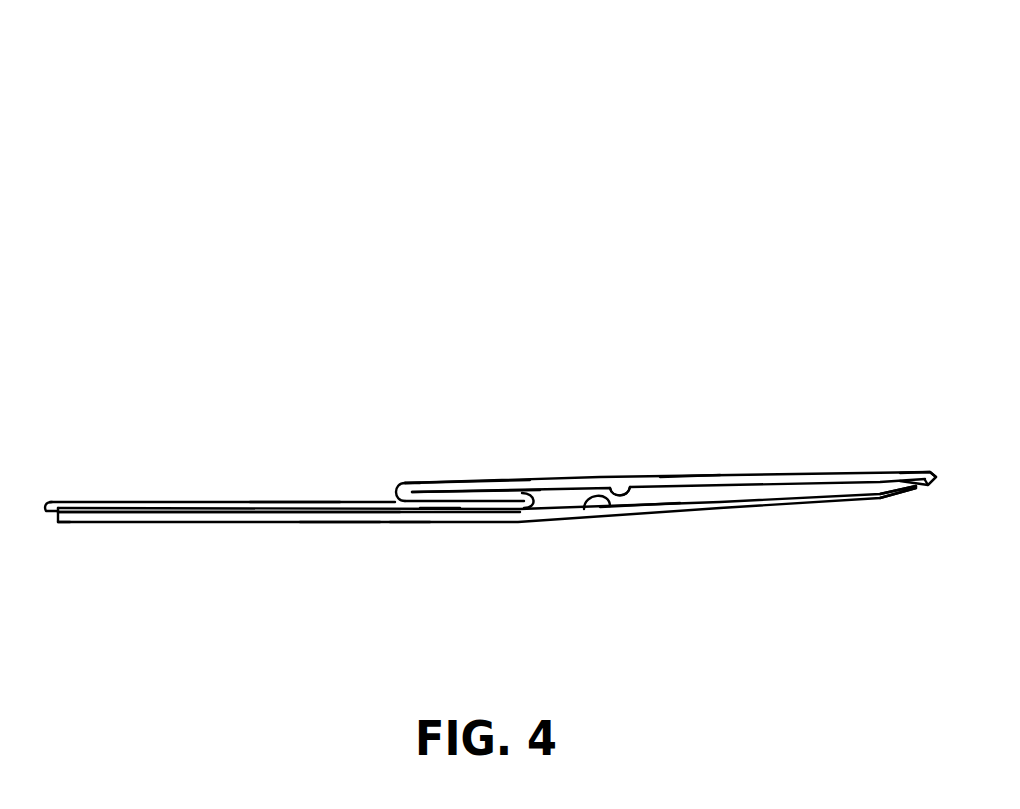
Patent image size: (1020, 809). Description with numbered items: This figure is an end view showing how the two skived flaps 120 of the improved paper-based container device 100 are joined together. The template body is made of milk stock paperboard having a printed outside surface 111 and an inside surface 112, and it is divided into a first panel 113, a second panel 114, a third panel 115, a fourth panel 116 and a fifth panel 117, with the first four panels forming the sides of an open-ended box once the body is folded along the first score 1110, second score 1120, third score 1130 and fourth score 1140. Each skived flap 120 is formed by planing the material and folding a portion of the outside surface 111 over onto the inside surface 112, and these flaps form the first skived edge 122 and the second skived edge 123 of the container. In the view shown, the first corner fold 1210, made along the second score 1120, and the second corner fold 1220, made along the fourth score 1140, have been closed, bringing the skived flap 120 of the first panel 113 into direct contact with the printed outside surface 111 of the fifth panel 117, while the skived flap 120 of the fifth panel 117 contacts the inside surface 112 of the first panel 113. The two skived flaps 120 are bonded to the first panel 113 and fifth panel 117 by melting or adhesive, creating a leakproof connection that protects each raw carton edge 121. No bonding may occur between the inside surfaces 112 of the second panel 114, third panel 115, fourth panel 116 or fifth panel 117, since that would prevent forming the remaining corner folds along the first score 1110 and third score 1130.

The container device 100 is at (423, 112).
The printed outside surface 111 is at (296, 503).
The inside surface 112 is at (648, 484).
The first panel 113 is at (706, 482).
The second panel 114 is at (757, 500).
The third panel 115 is at (224, 516).
The fourth panel 116 is at (206, 503).
The fifth panel 117 is at (437, 505).
The skived flap 120 is at (404, 483).
The raw carton edge 121 is at (463, 492).
The first skived edge 122 is at (560, 486).
The second skived edge 123 is at (405, 486).
The first score 1110 is at (393, 498).
The second score 1120 is at (52, 507).
The third score 1130 is at (407, 526).
The fourth score 1140 is at (933, 478).
The first corner fold 1210 is at (60, 523).
The second corner fold 1220 is at (910, 488).